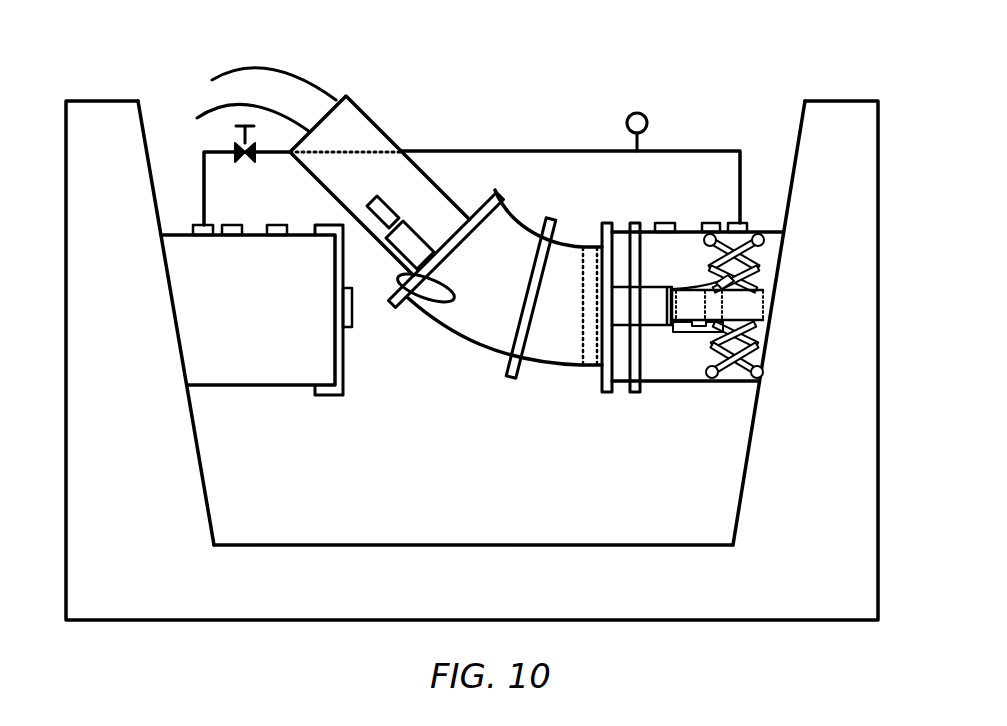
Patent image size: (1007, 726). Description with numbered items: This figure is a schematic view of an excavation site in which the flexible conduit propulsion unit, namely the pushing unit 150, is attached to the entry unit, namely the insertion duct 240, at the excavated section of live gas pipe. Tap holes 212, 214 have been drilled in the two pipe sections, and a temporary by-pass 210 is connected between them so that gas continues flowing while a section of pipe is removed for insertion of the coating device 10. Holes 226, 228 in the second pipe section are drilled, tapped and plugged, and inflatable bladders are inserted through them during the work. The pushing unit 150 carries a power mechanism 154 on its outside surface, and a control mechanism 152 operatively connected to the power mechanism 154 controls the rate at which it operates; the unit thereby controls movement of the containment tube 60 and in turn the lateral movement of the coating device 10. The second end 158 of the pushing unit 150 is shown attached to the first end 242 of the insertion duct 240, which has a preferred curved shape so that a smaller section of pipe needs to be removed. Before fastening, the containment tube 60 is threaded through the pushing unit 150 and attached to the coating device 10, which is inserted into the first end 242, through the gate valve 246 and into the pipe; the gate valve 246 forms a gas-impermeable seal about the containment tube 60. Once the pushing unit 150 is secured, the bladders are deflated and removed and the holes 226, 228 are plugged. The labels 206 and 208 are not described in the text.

The coating device 10 is at (681, 330).
The containment tube 60 is at (217, 78).
The pushing unit 150 is at (393, 143).
The control mechanism 152 is at (378, 207).
The power mechanism 154 is at (422, 214).
The second end 158 is at (410, 291).
The left wall of trough 206 is at (298, 417).
The right wall of trough 208 is at (681, 412).
The temporary by-pass 210 is at (528, 147).
The tap hole 212 is at (193, 232).
The tap hole 214 is at (748, 227).
The hole 226 is at (667, 223).
The hole 228 is at (717, 223).
The insertion duct 240 is at (471, 345).
The first end 242 is at (490, 186).
The gate valve 246 is at (586, 347).